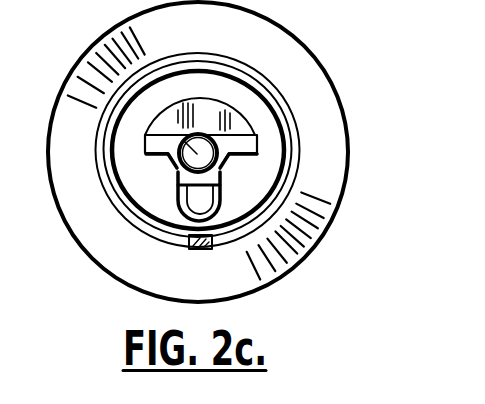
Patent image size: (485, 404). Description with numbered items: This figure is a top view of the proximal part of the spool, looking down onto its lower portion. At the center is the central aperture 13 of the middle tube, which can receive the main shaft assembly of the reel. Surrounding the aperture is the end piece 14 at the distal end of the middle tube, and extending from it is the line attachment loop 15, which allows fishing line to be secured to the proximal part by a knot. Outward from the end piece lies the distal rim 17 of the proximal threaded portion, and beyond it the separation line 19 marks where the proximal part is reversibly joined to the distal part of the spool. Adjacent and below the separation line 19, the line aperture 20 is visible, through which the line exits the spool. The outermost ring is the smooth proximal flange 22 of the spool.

The central aperture 13 is at (146, 136).
The end piece 14 is at (258, 134).
The line attachment loop 15 is at (178, 198).
The distal rim 17 is at (272, 105).
The separation line 19 is at (254, 75).
The line aperture 20 is at (195, 250).
The proximal flange 22 is at (263, 53).